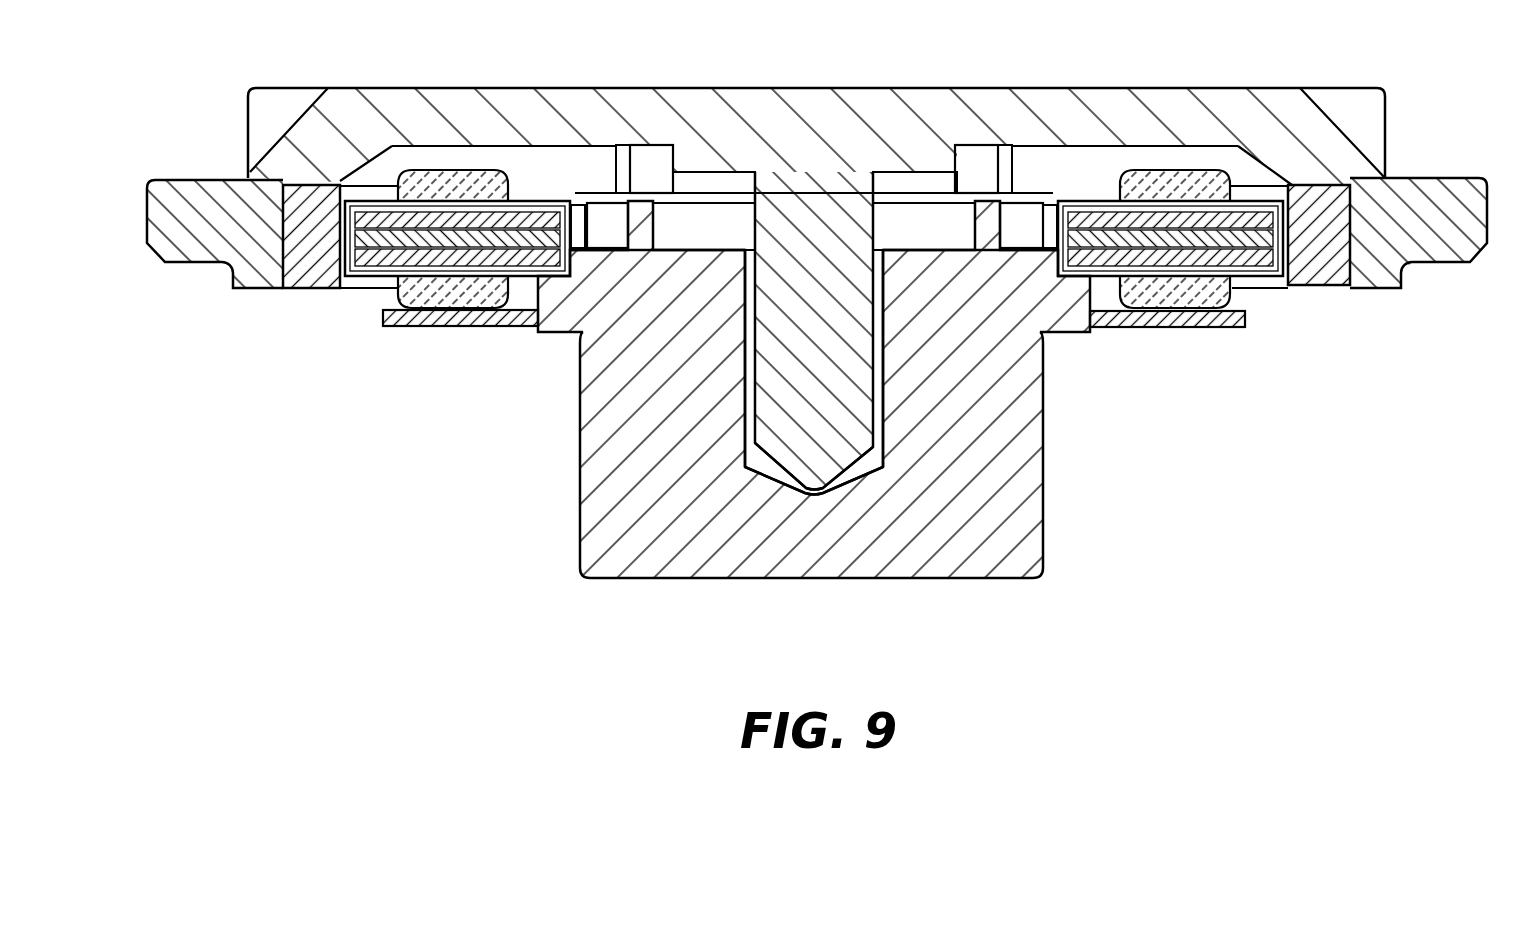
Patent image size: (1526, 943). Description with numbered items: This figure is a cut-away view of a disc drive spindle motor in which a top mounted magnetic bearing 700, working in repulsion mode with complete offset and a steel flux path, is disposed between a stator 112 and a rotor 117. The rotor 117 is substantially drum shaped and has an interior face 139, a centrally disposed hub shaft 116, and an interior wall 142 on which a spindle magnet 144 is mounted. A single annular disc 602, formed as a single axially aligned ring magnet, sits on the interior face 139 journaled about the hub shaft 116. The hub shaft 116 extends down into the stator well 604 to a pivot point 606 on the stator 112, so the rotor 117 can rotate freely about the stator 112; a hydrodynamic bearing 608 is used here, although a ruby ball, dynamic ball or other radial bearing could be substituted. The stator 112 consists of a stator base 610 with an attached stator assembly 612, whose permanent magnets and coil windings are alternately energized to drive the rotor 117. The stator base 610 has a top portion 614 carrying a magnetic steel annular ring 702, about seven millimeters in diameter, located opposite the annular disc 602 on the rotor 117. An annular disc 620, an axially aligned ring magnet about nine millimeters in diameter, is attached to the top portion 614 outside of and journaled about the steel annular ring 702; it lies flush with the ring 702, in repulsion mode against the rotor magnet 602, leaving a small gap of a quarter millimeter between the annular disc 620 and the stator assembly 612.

The interior face 139 is at (1060, 157).
The hub shaft 116 is at (832, 410).
The stator 112 is at (970, 548).
The hydrodynamic bearing 608 is at (885, 373).
The pivot point 606 is at (855, 470).
The stator well 604 is at (858, 475).
The stator base 610 is at (958, 273).
The top portion 614 is at (692, 248).
The annular disc 602 is at (663, 157).
The magnetic bearing 700 is at (617, 192).
The steel annular ring 702 is at (987, 212).
The annular disc 620 is at (588, 200).
The stator assembly 612 is at (440, 240).
The spindle magnet 144 is at (303, 232).
The interior wall 142 is at (283, 289).
The rotor 117 is at (1387, 250).